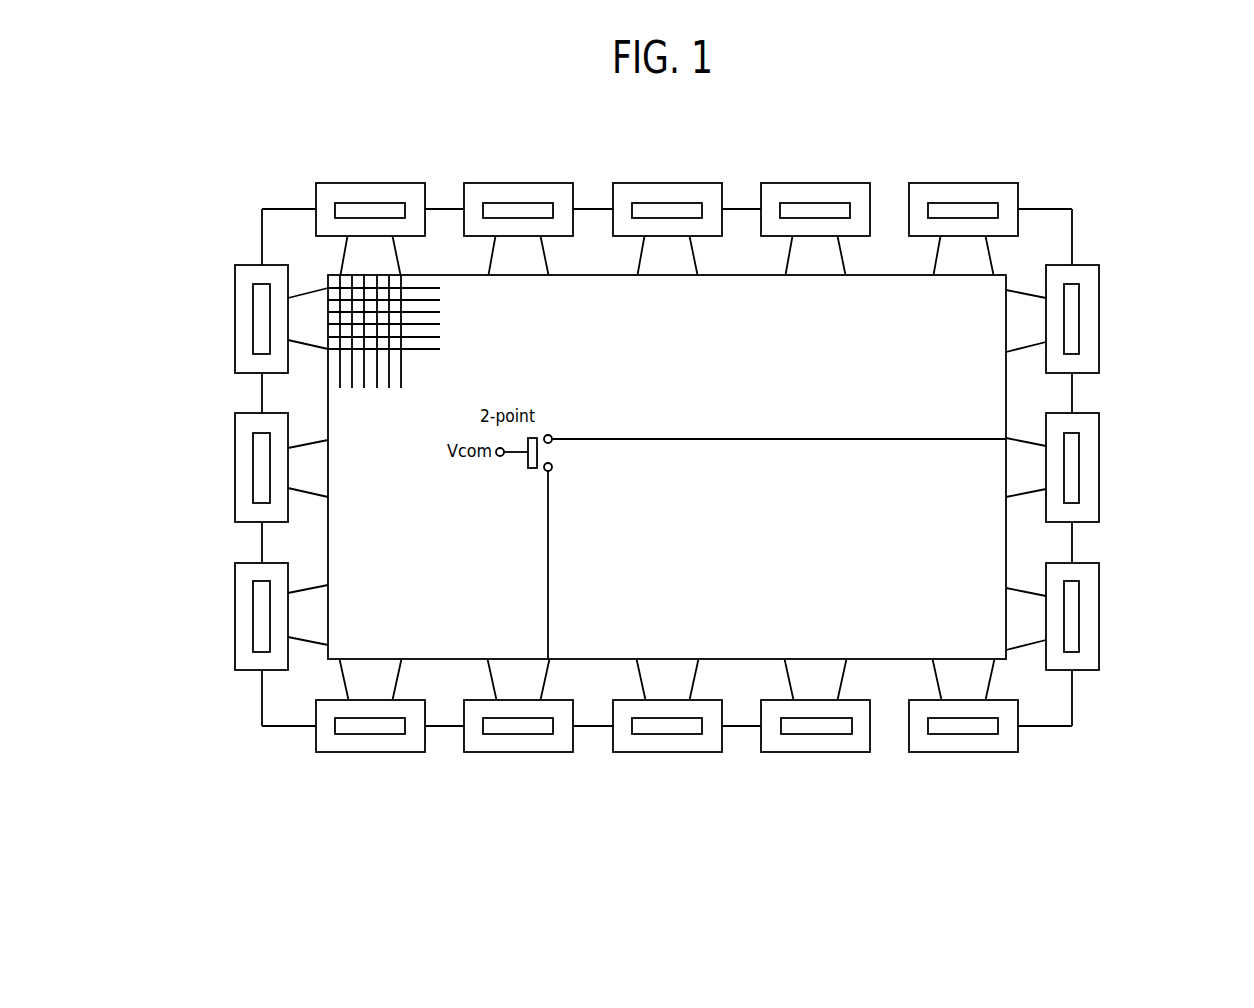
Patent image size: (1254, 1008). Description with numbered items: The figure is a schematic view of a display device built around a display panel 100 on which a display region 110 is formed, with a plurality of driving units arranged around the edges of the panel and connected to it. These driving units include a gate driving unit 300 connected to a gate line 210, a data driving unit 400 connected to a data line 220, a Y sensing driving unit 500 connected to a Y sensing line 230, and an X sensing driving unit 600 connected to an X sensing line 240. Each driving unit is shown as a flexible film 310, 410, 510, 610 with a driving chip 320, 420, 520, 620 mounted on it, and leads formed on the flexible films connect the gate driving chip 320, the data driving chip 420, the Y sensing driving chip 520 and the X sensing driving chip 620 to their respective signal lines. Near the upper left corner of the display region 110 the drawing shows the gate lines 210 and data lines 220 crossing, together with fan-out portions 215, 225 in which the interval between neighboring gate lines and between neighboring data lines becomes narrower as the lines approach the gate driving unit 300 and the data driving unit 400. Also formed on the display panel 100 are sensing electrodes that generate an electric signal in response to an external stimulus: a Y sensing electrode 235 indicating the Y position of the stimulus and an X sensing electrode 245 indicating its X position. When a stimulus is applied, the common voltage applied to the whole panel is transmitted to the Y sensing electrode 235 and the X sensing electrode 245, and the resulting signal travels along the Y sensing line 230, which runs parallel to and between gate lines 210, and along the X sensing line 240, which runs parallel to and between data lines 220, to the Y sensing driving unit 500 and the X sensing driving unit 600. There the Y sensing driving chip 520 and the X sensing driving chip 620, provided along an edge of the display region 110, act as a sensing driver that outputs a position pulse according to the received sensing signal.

The display panel 100 is at (1053, 209).
The display region 110 is at (733, 659).
The gate line 210 is at (441, 346).
The fan-out portion 215 is at (300, 610).
The data line 220 is at (366, 390).
The fan-out portion 225 is at (373, 250).
The Y sensing line 230 is at (796, 438).
The Y sensing electrode 235 is at (552, 436).
The X sensing line 240 is at (549, 541).
The X sensing electrode 245 is at (552, 468).
The gate driving unit 300 is at (215, 467).
The flexible film 310 is at (236, 508).
The gate driving chip 320 is at (256, 441).
The data driving unit 400 is at (811, 178).
The flexible film 410 is at (768, 183).
The data driving chip 420 is at (835, 204).
The Y sensing driving unit 500 is at (1117, 467).
The flexible film 510 is at (1100, 428).
The Y sensing driving chip 520 is at (1080, 496).
The X sensing driving unit 600 is at (817, 757).
The flexible film 610 is at (860, 752).
The X sensing driving chip 620 is at (863, 820).